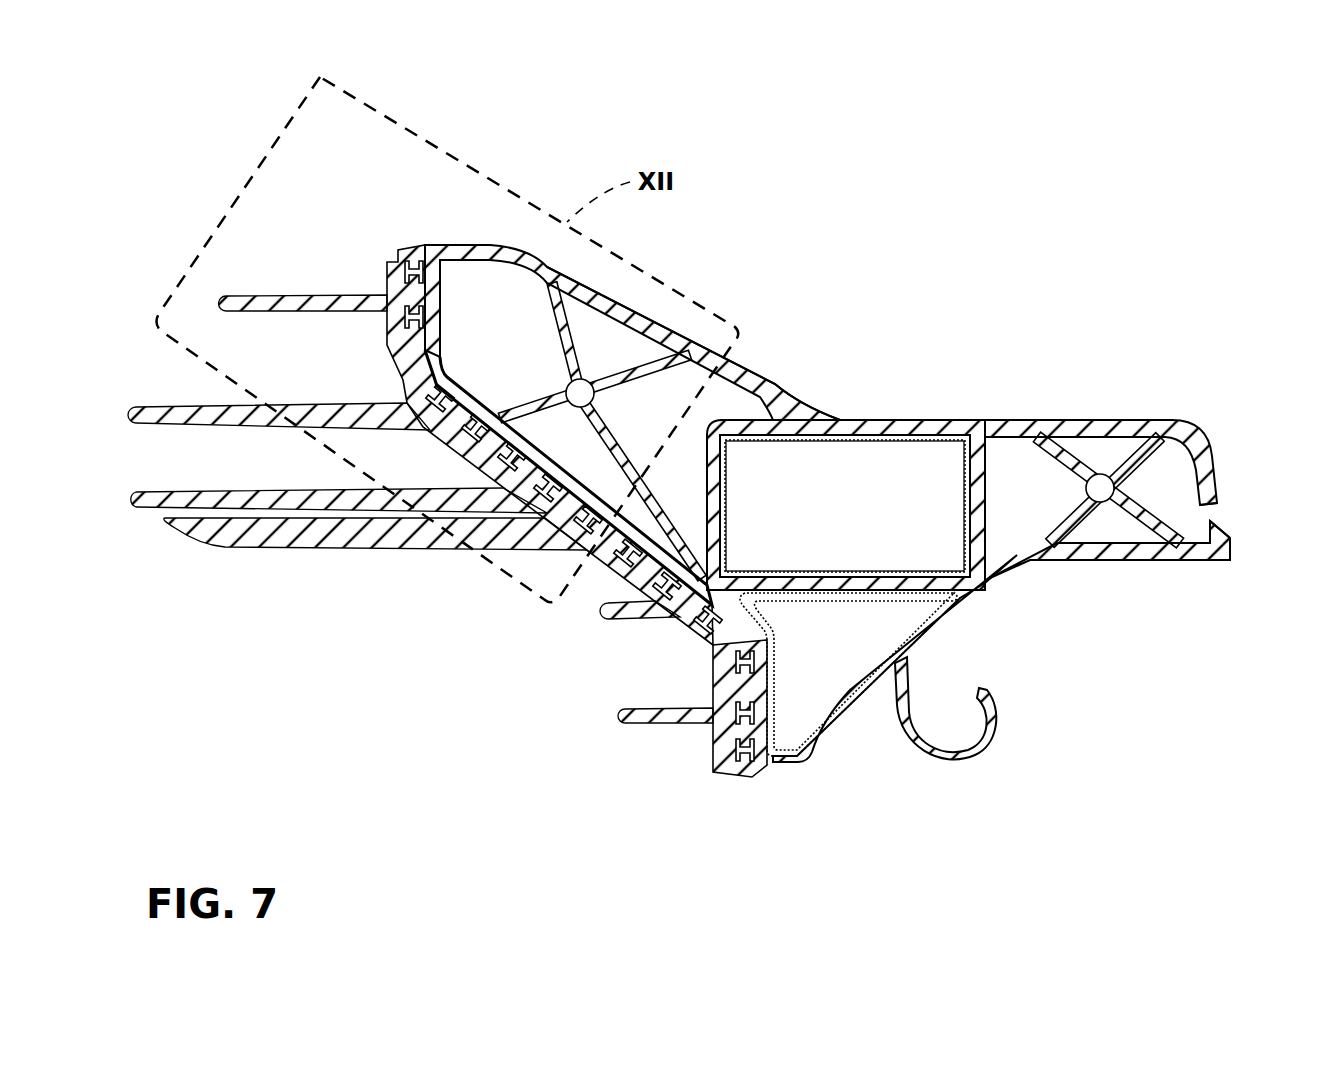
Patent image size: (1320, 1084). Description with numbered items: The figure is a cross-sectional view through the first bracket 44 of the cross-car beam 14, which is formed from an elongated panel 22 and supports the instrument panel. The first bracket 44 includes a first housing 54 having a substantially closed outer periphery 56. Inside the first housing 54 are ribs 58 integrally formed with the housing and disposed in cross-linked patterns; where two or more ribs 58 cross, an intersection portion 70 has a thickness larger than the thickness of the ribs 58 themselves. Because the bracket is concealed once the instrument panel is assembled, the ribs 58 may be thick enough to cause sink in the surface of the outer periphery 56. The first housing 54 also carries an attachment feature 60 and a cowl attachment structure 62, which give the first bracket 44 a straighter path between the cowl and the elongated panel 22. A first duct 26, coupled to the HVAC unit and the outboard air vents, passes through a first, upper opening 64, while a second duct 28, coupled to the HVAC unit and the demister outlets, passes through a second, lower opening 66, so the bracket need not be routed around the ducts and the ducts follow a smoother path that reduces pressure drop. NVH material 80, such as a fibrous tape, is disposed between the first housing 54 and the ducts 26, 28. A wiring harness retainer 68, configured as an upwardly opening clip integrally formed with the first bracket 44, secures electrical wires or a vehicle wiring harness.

The cross-car beam 14 is at (337, 556).
The elongated panel 22 is at (538, 542).
The first duct 26 is at (910, 432).
The second duct 28 is at (922, 644).
The first bracket 44 is at (1098, 424).
The first housing 54 is at (1040, 426).
The outer periphery 56 is at (804, 395).
The ribs 58 is at (634, 364).
The attachment feature 60 is at (540, 503).
The cowl attachment structure 62 is at (1225, 500).
The first opening 64 is at (762, 533).
The second opening 66 is at (816, 682).
The wiring harness retainer 68 is at (999, 743).
The intersection portion 70 is at (1102, 510).
The NVH material 80 is at (866, 438).